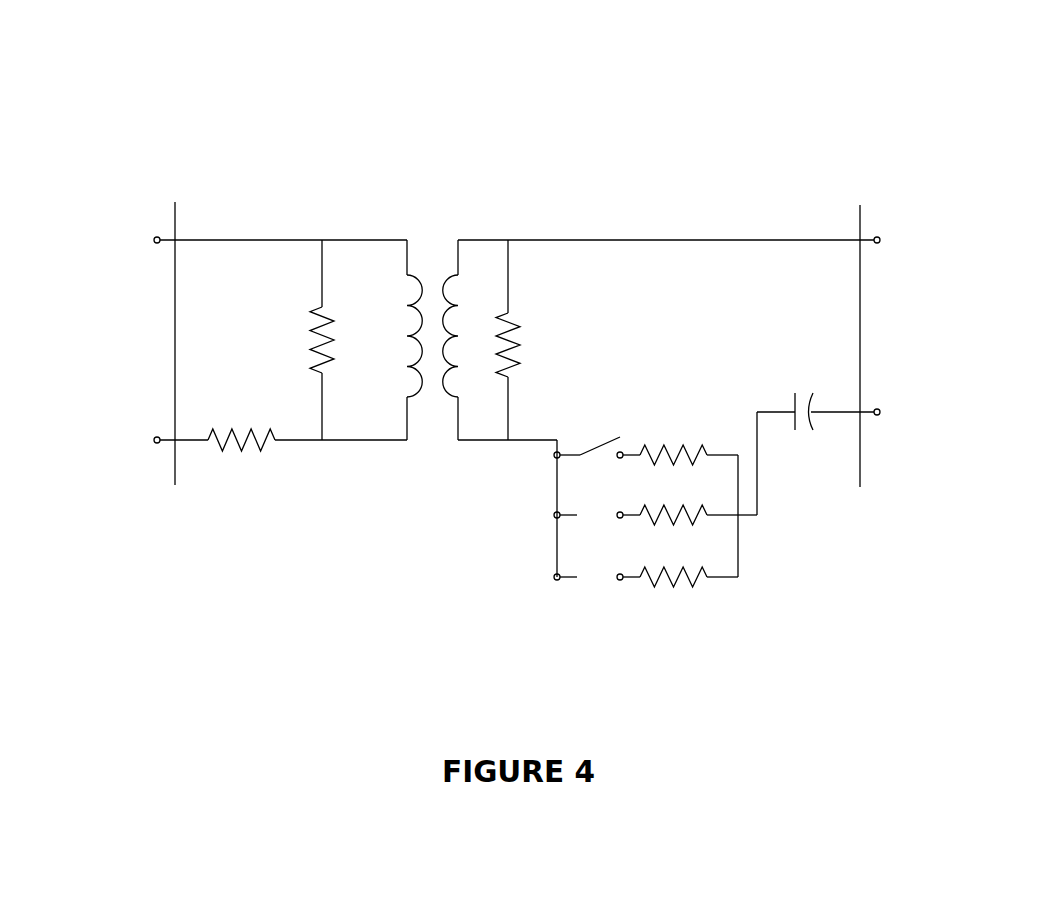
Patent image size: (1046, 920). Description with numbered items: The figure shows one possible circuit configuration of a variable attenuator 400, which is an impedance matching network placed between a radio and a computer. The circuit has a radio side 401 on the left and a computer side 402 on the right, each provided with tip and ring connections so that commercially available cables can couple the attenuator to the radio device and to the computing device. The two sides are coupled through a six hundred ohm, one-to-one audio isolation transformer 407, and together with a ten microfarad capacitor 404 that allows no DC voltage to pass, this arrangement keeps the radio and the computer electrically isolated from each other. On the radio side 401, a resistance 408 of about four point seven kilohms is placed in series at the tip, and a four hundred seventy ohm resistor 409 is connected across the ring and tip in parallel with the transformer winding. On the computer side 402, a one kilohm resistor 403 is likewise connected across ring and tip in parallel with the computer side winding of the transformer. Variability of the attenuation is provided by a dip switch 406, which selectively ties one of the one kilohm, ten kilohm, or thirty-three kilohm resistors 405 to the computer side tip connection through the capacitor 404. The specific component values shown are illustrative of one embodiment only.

The variable attenuator 400 is at (322, 80).
The radio side 401 is at (98, 346).
The computer side 402 is at (960, 341).
The 1K ohm resistor 403 is at (540, 316).
The 10 uF capacitor 404 is at (808, 375).
The resistors 405 is at (732, 594).
The dip switch 406 is at (550, 500).
The isolation transformer 407 is at (432, 415).
The resistance 408 is at (247, 490).
The 470 ohm resistor 409 is at (297, 337).